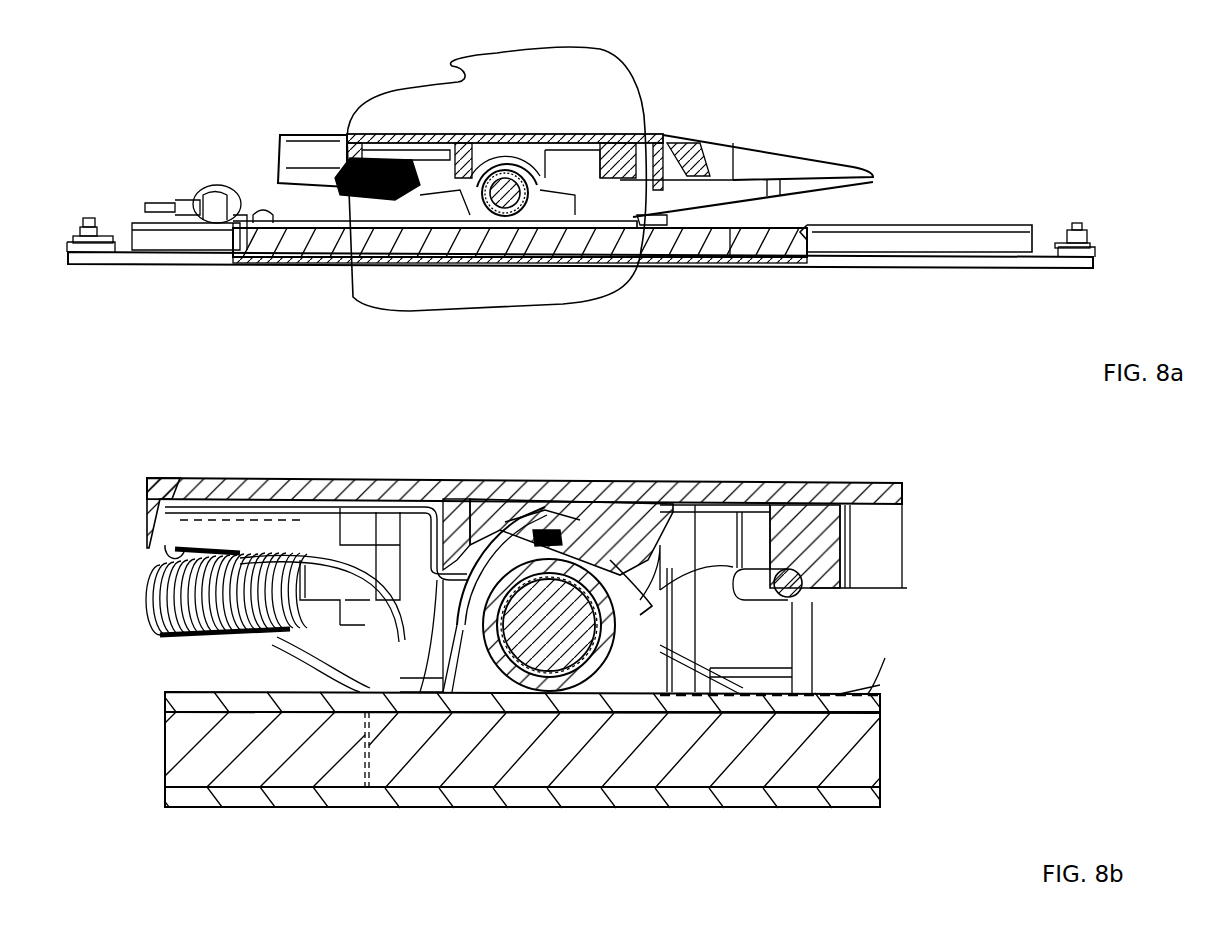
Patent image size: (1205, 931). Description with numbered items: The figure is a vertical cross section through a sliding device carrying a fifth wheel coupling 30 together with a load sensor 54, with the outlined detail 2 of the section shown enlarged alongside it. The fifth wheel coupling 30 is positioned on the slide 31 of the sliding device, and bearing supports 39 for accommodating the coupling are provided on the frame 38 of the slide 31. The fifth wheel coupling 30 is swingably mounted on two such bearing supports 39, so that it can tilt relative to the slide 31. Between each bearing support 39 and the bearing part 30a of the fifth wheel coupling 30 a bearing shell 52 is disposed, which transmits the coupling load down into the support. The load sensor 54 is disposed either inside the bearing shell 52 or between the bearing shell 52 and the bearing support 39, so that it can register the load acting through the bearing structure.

In FIG. 8a, the foot / shoe outline 2 is at (403, 313).
In FIG. 8a, the fifth wheel coupling 30 is at (690, 131).
In FIG. 8b, the fifth wheel coupling 30 is at (420, 490).
In FIG. 8b, the bearing part 30a is at (630, 575).
In FIG. 8a, the slide 31 is at (318, 248).
In FIG. 8a, the frame 38 is at (298, 219).
In FIG. 8a, the bearing support 39 is at (527, 216).
In FIG. 8b, the bearing support 39 is at (620, 607).
In FIG. 8b, the bearing shell 52 is at (565, 503).
In FIG. 8a, the load sensor 54 is at (540, 140).
In FIG. 8b, the load sensor 54 is at (535, 502).